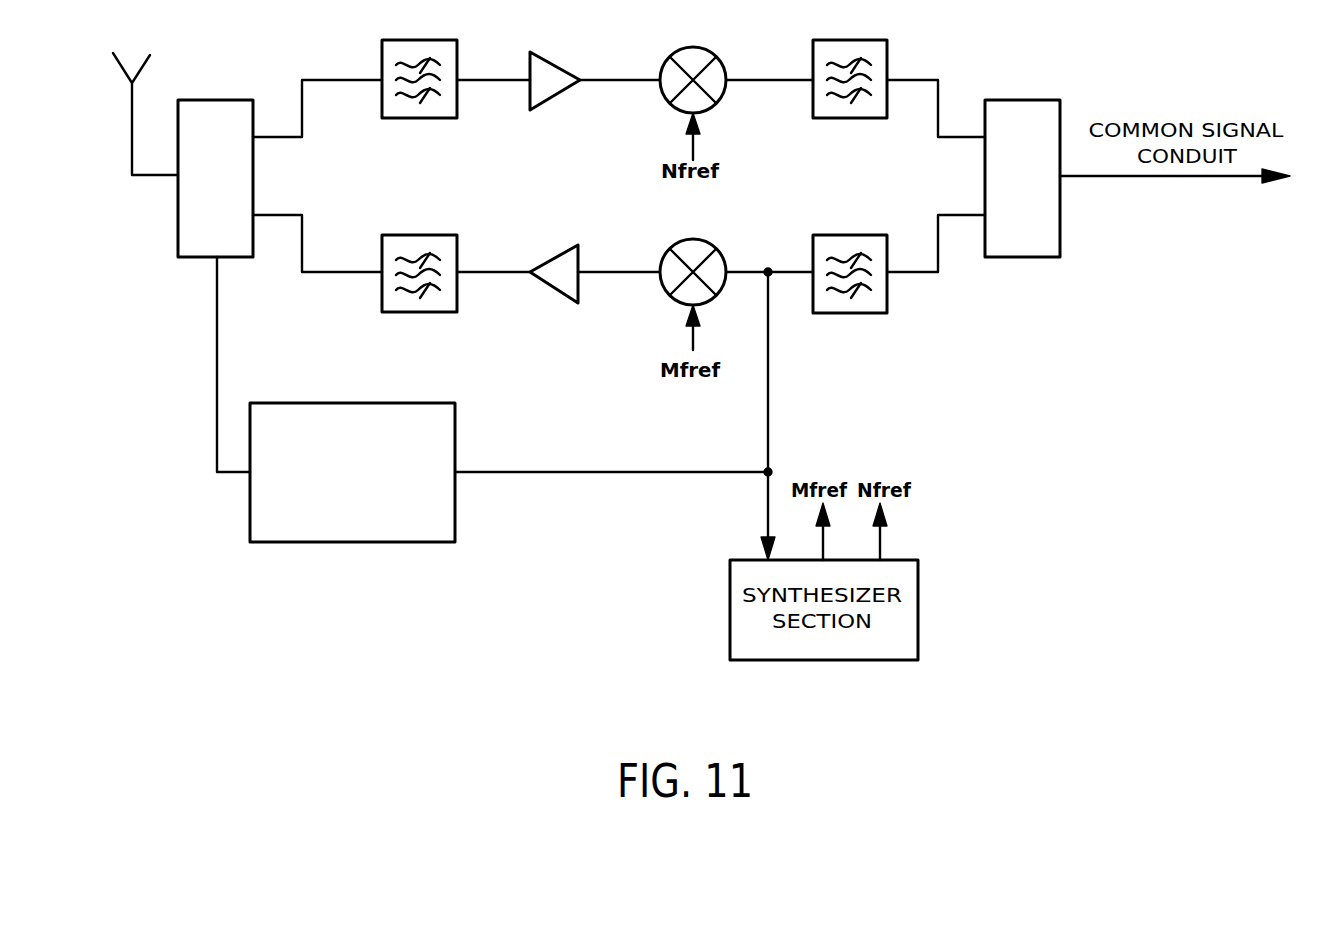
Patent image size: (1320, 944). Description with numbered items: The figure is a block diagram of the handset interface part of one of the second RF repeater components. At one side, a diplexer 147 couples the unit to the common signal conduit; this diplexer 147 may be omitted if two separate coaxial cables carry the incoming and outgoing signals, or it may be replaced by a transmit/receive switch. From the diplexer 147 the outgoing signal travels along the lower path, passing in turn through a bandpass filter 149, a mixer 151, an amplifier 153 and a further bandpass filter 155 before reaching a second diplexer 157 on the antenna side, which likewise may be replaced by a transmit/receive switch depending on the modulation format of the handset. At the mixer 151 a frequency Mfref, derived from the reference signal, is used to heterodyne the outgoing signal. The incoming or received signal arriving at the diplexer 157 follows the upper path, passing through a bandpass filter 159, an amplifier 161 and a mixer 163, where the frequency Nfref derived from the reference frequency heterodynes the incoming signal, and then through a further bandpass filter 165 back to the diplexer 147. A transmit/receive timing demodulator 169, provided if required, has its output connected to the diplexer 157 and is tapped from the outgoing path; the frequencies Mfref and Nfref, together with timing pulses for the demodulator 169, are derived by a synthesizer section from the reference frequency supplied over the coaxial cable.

The diplexer 147 is at (1035, 258).
The bandpass filter 149 is at (862, 315).
The mixer 151 is at (664, 292).
The amplifier 153 is at (552, 295).
The bandpass filter 155 is at (420, 314).
The diplexer 157 is at (200, 258).
The bandpass filter 159 is at (422, 120).
The amplifier 161 is at (553, 100).
The mixer 163 is at (690, 47).
The bandpass filter 165 is at (860, 40).
The transmit/receive timing demodulator 169 is at (345, 543).